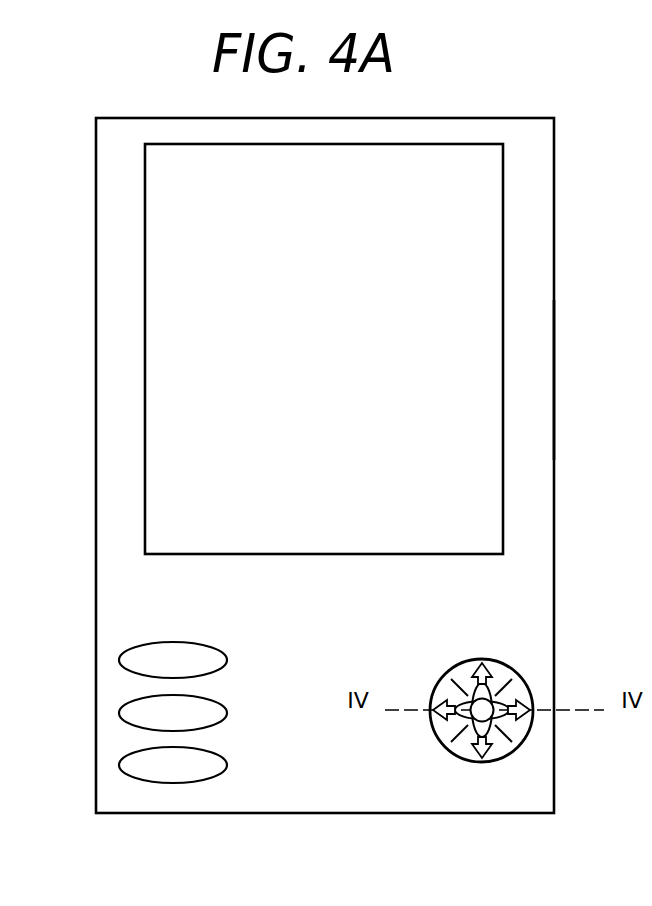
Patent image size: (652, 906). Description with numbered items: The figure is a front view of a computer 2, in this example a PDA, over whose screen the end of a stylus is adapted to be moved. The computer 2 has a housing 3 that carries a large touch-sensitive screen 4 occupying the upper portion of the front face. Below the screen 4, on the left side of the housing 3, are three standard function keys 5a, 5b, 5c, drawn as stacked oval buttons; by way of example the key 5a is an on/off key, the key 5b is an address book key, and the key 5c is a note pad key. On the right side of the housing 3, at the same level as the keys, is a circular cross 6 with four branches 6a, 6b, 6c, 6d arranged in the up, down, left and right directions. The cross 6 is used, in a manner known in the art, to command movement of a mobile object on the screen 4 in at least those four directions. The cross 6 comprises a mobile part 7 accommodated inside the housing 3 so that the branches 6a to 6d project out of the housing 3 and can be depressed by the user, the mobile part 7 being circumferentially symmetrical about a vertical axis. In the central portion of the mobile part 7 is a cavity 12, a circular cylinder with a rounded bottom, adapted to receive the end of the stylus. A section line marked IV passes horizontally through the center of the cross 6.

The computer 2 is at (562, 124).
The housing 3 is at (536, 383).
The screen 4 is at (168, 200).
The key 5a is at (125, 658).
The key 5b is at (125, 712).
The key 5c is at (125, 768).
The cross 6 is at (528, 684).
The branch 6a is at (503, 668).
The branch 6b is at (468, 743).
The branch 6c is at (444, 680).
The branch 6d is at (513, 735).
The mobile part 7 is at (460, 670).
The cavity 12 is at (442, 738).